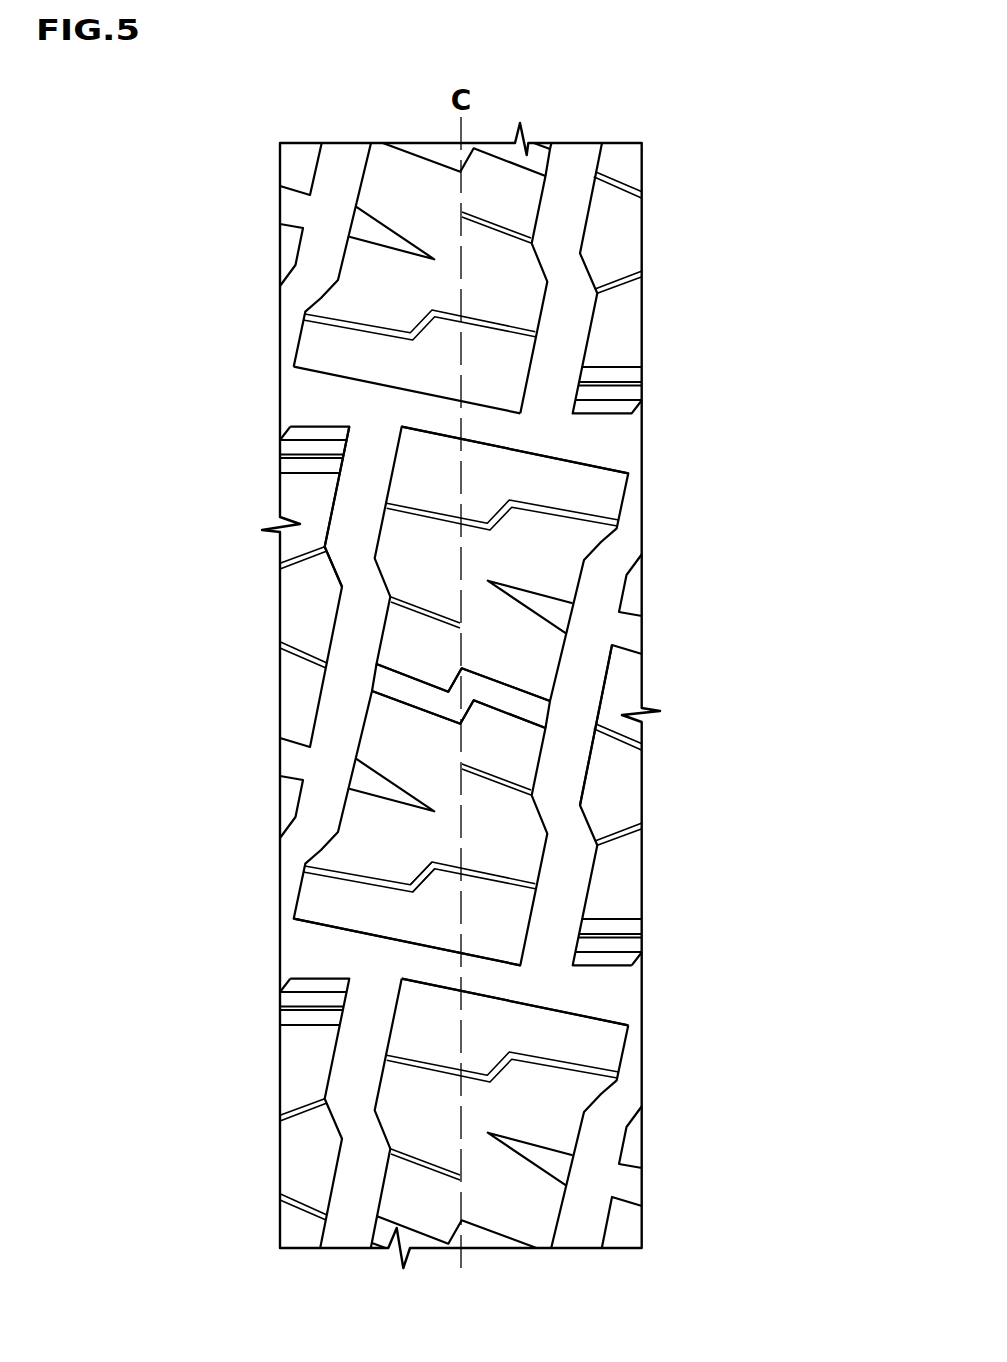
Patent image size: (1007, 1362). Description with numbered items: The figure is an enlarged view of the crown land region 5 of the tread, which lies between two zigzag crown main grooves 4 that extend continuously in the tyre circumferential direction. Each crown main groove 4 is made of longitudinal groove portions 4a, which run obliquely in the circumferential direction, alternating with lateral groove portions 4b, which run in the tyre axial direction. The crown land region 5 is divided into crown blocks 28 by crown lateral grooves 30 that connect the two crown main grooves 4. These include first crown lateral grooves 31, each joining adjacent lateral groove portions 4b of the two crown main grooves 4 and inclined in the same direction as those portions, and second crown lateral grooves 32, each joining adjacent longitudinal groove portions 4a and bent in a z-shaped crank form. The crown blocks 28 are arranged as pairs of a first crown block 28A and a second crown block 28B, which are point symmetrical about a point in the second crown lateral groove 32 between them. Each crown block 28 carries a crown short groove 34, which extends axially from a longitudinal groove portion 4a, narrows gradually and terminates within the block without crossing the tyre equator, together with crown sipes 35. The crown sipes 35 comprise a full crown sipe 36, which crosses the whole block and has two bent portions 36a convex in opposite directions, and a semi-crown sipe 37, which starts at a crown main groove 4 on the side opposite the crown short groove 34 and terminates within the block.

The crown main groove 4 is at (333, 167).
The longitudinal groove portion 4a is at (342, 513).
The lateral groove portion 4b is at (307, 406).
The crown land region 5 is at (403, 192).
The crown block 28 is at (461, 696).
The first crown block 28A is at (506, 548).
The second crown block 28B is at (424, 779).
The crown lateral groove 30 is at (538, 659).
The first crown lateral groove 31 is at (488, 413).
The second crown lateral groove 32 is at (502, 709).
The crown short groove 34 is at (367, 237).
The crown sipe 35 is at (461, 696).
The full crown sipe 36 is at (556, 515).
The bent portion 36a is at (433, 865).
The semi-crown sipe 37 is at (424, 614).